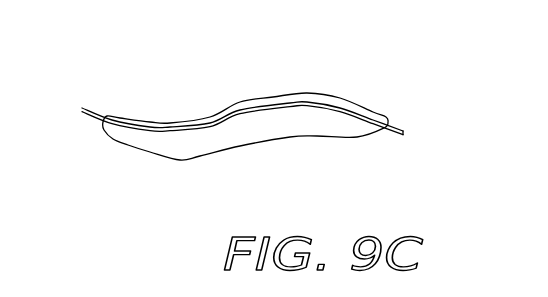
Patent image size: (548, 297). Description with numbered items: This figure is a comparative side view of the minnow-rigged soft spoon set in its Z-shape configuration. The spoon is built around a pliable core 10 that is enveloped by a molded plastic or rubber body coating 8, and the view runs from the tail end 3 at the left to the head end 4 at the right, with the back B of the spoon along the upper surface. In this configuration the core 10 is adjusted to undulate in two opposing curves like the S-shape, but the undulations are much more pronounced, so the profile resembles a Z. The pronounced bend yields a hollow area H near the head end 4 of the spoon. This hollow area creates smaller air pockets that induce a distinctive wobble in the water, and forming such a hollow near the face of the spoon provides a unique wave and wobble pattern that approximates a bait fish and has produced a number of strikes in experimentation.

The tail end 3 is at (120, 113).
The head end 4 is at (393, 107).
The back B is at (257, 96).
The pliable core 10 is at (210, 133).
The body coating 8 is at (252, 144).
The hollow area H is at (307, 137).